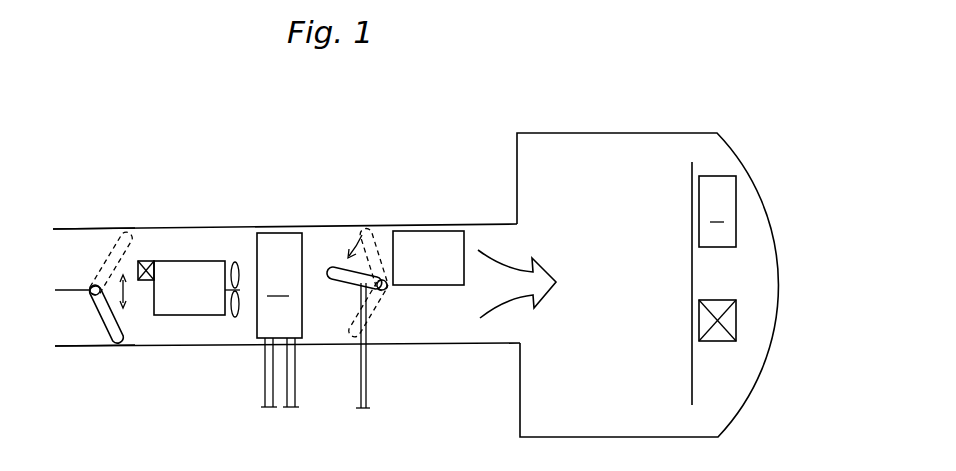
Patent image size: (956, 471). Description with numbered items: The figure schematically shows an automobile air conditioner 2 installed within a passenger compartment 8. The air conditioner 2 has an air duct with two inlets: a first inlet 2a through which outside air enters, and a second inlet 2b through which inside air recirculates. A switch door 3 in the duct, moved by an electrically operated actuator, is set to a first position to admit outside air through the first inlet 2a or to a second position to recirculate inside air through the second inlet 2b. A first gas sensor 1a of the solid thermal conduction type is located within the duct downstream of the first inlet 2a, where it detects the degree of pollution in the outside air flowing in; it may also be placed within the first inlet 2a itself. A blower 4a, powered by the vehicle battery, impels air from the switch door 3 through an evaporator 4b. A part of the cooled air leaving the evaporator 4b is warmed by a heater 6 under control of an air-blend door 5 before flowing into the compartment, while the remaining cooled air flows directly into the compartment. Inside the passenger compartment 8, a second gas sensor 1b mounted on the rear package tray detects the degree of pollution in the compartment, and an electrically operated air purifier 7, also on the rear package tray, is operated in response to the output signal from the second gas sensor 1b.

The air conditioner 2 is at (325, 227).
The first inlet 2a is at (86, 232).
The second inlet 2b is at (84, 346).
The switch door 3 is at (118, 341).
The first gas sensor 1a is at (146, 261).
The blower 4a is at (198, 264).
The evaporator 4b is at (279, 320).
The air-blend door 5 is at (336, 280).
The heater 6 is at (432, 238).
The air purifier 7 is at (717, 211).
The passenger compartment 8 is at (578, 158).
The second gas sensor 1b is at (703, 319).